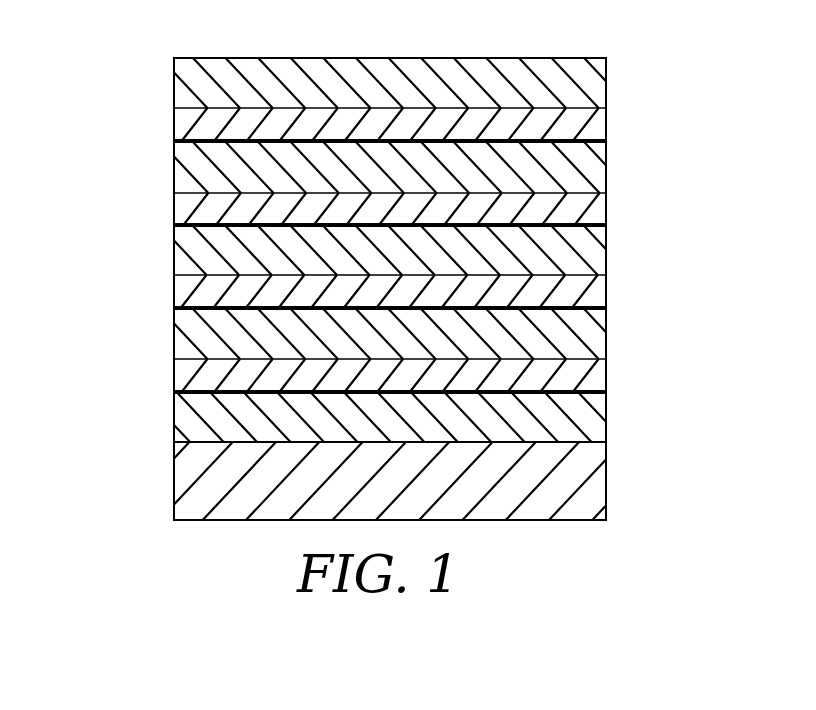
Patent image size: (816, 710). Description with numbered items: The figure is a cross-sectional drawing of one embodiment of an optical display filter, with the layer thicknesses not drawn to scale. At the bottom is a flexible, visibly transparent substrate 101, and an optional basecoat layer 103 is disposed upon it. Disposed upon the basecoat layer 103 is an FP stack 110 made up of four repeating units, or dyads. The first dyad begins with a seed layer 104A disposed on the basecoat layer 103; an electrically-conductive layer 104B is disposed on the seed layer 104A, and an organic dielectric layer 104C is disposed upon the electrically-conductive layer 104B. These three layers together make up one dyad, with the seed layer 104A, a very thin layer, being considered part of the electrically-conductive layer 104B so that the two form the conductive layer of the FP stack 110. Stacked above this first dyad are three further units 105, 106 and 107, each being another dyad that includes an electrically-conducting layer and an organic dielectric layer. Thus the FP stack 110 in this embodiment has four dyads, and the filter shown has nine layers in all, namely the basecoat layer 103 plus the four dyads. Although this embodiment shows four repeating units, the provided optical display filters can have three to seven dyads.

The substrate 101 is at (594, 491).
The basecoat layer 103 is at (596, 417).
The seed layer 104A is at (606, 393).
The electrically-conductive layer 104B is at (607, 369).
The organic dielectric layer 104C is at (607, 335).
The unit 105 is at (167, 227).
The unit 106 is at (613, 138).
The unit 107 is at (167, 55).
The FP stack 110 is at (102, 390).